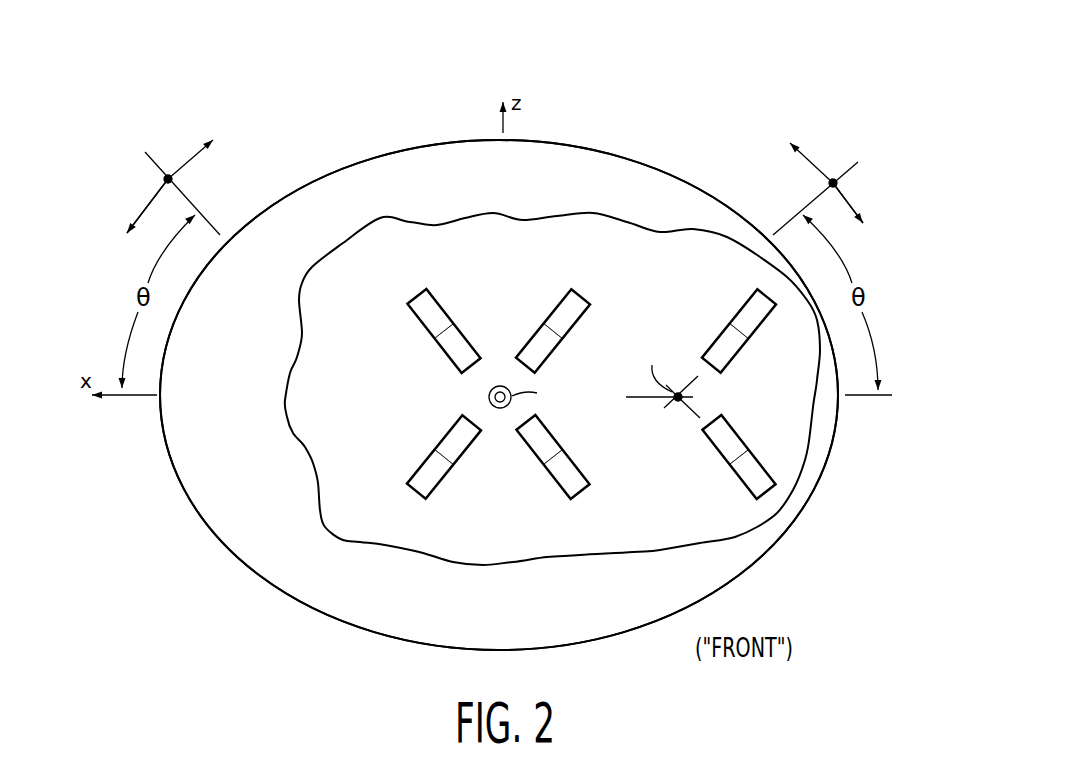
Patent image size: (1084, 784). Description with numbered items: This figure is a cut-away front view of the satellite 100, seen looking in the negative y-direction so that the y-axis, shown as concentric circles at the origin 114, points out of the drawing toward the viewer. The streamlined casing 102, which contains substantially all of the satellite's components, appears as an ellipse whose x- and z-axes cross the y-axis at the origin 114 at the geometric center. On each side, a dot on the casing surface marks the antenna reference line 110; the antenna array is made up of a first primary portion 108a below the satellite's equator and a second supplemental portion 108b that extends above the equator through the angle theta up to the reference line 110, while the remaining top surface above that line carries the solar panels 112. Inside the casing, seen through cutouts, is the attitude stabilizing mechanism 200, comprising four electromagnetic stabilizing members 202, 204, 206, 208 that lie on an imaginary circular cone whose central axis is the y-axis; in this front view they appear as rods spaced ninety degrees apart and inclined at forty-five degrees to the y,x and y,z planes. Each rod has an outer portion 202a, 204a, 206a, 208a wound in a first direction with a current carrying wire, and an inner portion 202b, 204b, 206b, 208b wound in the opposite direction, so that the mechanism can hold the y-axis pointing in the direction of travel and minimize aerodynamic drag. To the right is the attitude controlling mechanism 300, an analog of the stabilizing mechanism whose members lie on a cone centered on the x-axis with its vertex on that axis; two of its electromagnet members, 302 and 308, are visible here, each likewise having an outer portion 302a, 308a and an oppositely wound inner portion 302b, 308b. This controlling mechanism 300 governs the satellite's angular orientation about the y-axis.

The satellite 100 is at (308, 148).
The casing 102 is at (237, 538).
The first primary portion of the antenna array 108a is at (501, 216).
The second supplemental portion of the antenna array 108b is at (499, 228).
The antenna reference line 110 is at (163, 170).
The solar panels 112 is at (500, 146).
The origin 114 is at (489, 397).
The attitude stabilizing mechanism 200 is at (352, 400).
The electromagnetic stabilizing member 202 is at (422, 295).
The outer portion of stabilizing member 202a is at (433, 322).
The inner portion of stabilizing member 202b is at (463, 347).
The electromagnetic stabilizing member 204 is at (585, 297).
The outer portion of stabilizing member 204a is at (558, 312).
The inner portion of stabilizing member 204b is at (543, 356).
The electromagnetic stabilizing member 206 is at (585, 485).
The outer portion of stabilizing member 206a is at (560, 480).
The inner portion of stabilizing member 206b is at (543, 441).
The electromagnetic stabilizing member 208 is at (418, 496).
The outer portion of stabilizing member 208a is at (430, 474).
The inner portion of stabilizing member 208b is at (447, 438).
The attitude controlling mechanism 300 is at (772, 403).
The electromagnet controlling member 302 is at (767, 293).
The outer portion of controlling member 302a is at (745, 318).
The inner portion of controlling member 302b is at (730, 349).
The electromagnet controlling member 308 is at (760, 488).
The outer portion of controlling member 308a is at (752, 466).
The inner portion of controlling member 308b is at (723, 443).